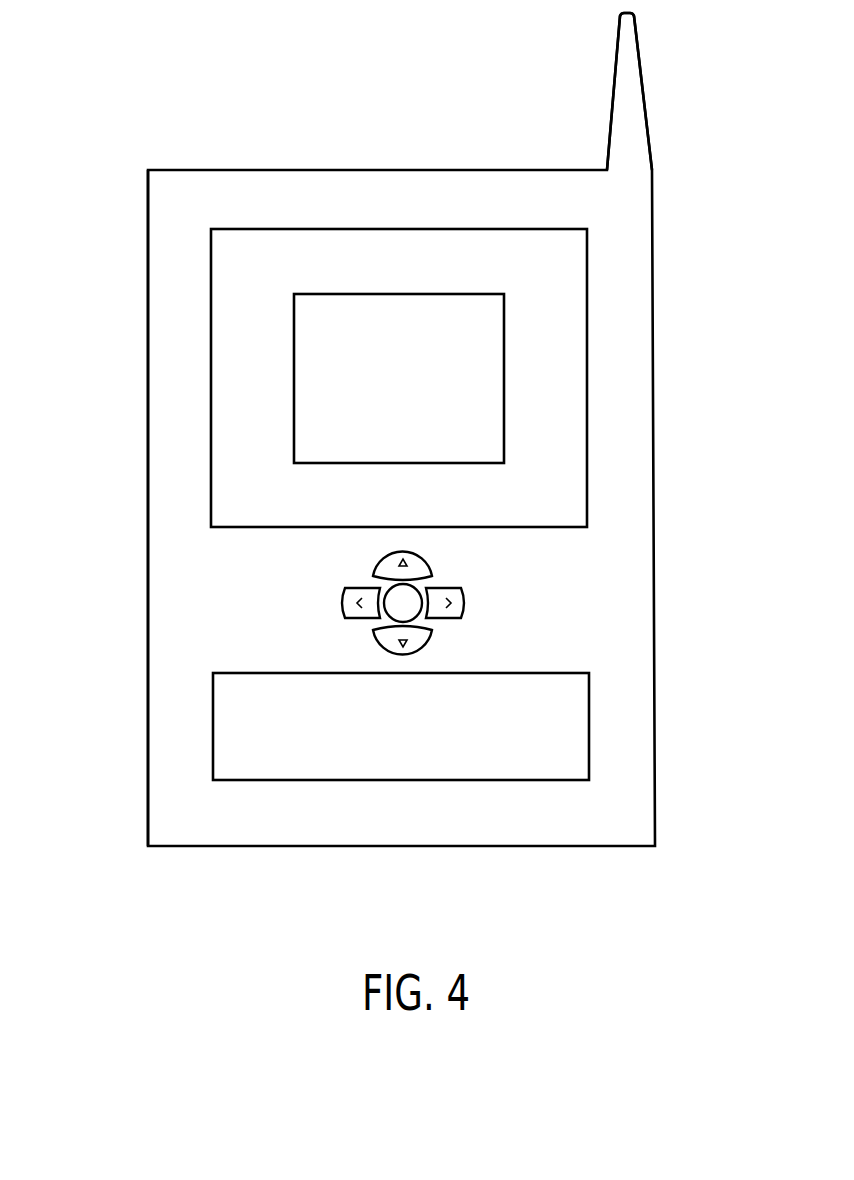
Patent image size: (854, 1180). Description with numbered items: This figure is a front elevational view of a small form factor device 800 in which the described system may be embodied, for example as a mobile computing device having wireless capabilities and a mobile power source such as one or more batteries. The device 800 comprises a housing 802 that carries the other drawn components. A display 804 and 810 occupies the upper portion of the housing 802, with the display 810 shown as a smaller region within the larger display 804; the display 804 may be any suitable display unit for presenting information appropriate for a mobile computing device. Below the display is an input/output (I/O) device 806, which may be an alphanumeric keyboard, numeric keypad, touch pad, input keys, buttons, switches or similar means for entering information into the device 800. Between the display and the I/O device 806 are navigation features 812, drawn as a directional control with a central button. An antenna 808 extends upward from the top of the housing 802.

The small form factor device 800 is at (144, 110).
The housing 802 is at (148, 595).
The display 804 is at (587, 283).
The input/output (I/O) device 806 is at (589, 727).
The antenna 808 is at (612, 93).
The display 810 is at (397, 294).
The navigation features 812 is at (505, 604).